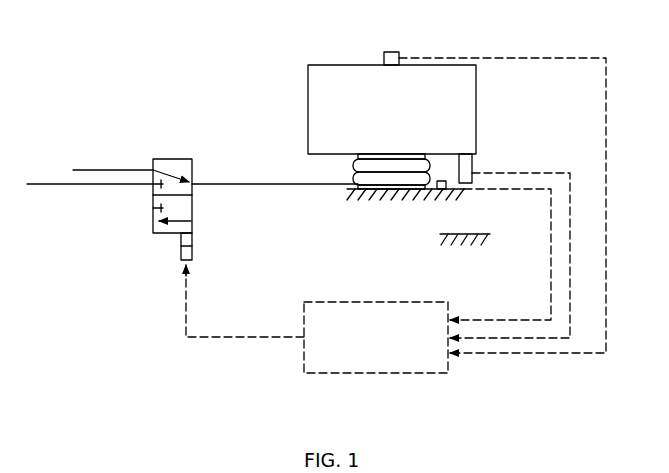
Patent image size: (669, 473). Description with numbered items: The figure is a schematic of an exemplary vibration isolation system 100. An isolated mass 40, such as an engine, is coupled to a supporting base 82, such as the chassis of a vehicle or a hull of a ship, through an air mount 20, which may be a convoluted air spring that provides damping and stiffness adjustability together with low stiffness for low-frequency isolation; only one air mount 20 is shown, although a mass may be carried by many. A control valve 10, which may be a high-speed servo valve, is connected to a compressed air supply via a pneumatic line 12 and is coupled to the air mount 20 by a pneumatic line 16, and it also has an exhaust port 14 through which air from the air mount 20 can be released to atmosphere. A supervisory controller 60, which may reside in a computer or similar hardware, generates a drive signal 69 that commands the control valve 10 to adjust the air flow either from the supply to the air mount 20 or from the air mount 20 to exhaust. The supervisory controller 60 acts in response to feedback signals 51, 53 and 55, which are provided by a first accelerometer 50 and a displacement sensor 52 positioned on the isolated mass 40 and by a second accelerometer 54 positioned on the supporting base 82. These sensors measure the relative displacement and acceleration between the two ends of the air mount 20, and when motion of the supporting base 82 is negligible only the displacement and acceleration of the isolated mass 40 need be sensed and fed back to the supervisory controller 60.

The vibration isolation system 100 is at (142, 72).
The control valve 10 is at (155, 149).
The pneumatic line 12 is at (93, 161).
The exhaust port 14 is at (76, 177).
The pneumatic line 16 is at (231, 177).
The air mount 20 is at (344, 167).
The isolated mass 40 is at (299, 99).
The first accelerometer 50 is at (382, 43).
The feedback signal 51 is at (525, 347).
The displacement sensor 52 is at (465, 157).
The feedback signal 53 is at (481, 332).
The second accelerometer 54 is at (433, 172).
The feedback signal 55 is at (503, 311).
The supervisory controller 60 is at (361, 366).
The drive signal 69 is at (220, 330).
The supporting base 82 is at (364, 190).